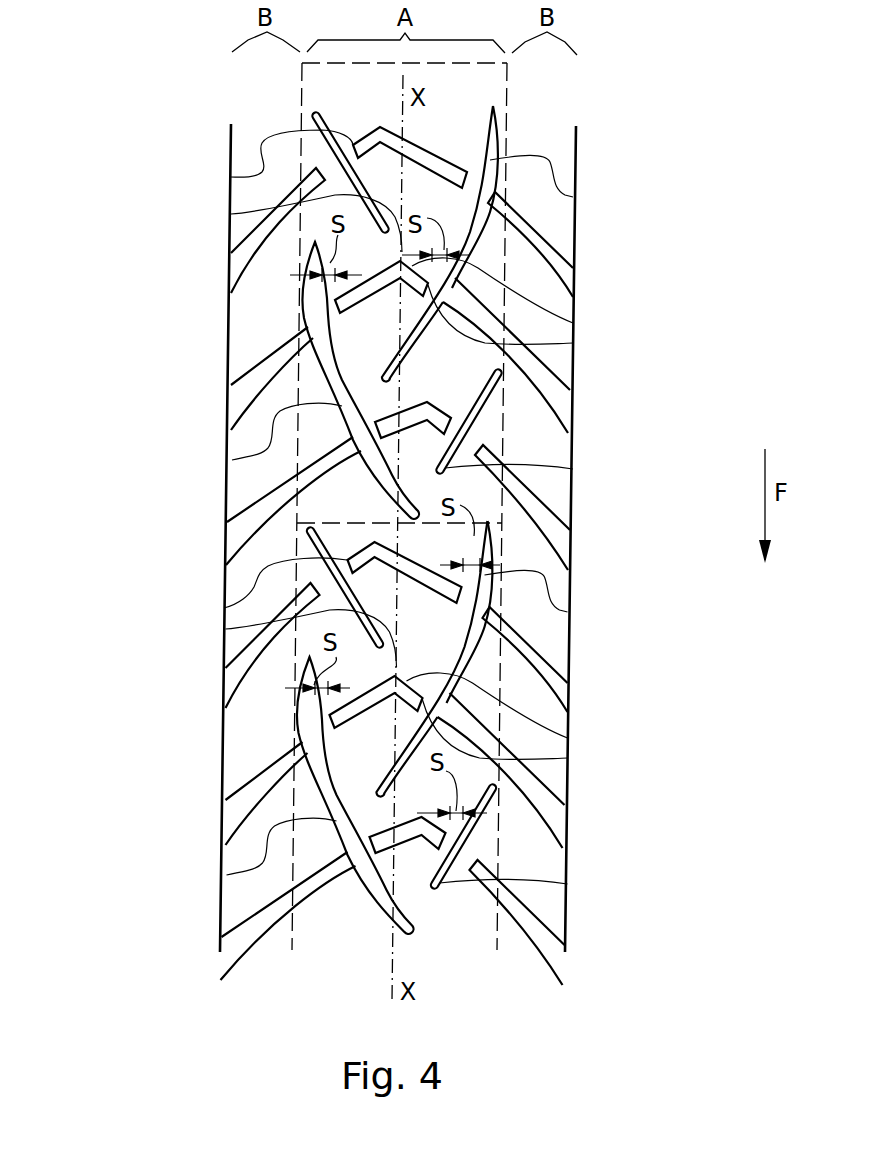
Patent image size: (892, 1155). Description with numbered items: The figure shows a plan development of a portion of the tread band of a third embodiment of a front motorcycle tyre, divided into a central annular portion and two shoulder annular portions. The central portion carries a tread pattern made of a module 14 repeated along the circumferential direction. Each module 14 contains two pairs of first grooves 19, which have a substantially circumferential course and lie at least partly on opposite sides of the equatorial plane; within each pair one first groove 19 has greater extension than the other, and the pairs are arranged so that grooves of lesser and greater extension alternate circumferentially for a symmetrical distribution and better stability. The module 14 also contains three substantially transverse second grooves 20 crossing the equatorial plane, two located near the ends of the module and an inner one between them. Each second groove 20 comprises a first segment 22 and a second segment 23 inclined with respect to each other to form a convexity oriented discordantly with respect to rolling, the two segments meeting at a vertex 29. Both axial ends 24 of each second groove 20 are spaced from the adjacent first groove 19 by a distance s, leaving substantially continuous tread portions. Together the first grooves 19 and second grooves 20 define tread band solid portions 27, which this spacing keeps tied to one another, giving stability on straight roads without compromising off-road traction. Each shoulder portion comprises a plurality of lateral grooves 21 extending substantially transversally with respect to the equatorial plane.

The module 14 is at (508, 88).
The first grooves 19 is at (231, 177).
The second grooves 20 is at (380, 420).
The lateral grooves 21 is at (232, 253).
The first segment 22 is at (690, 322).
The second segment 23 is at (573, 322).
The axial end 24 is at (573, 343).
The tread band solid portions 27 is at (391, 605).
The vertex 29 is at (382, 128).